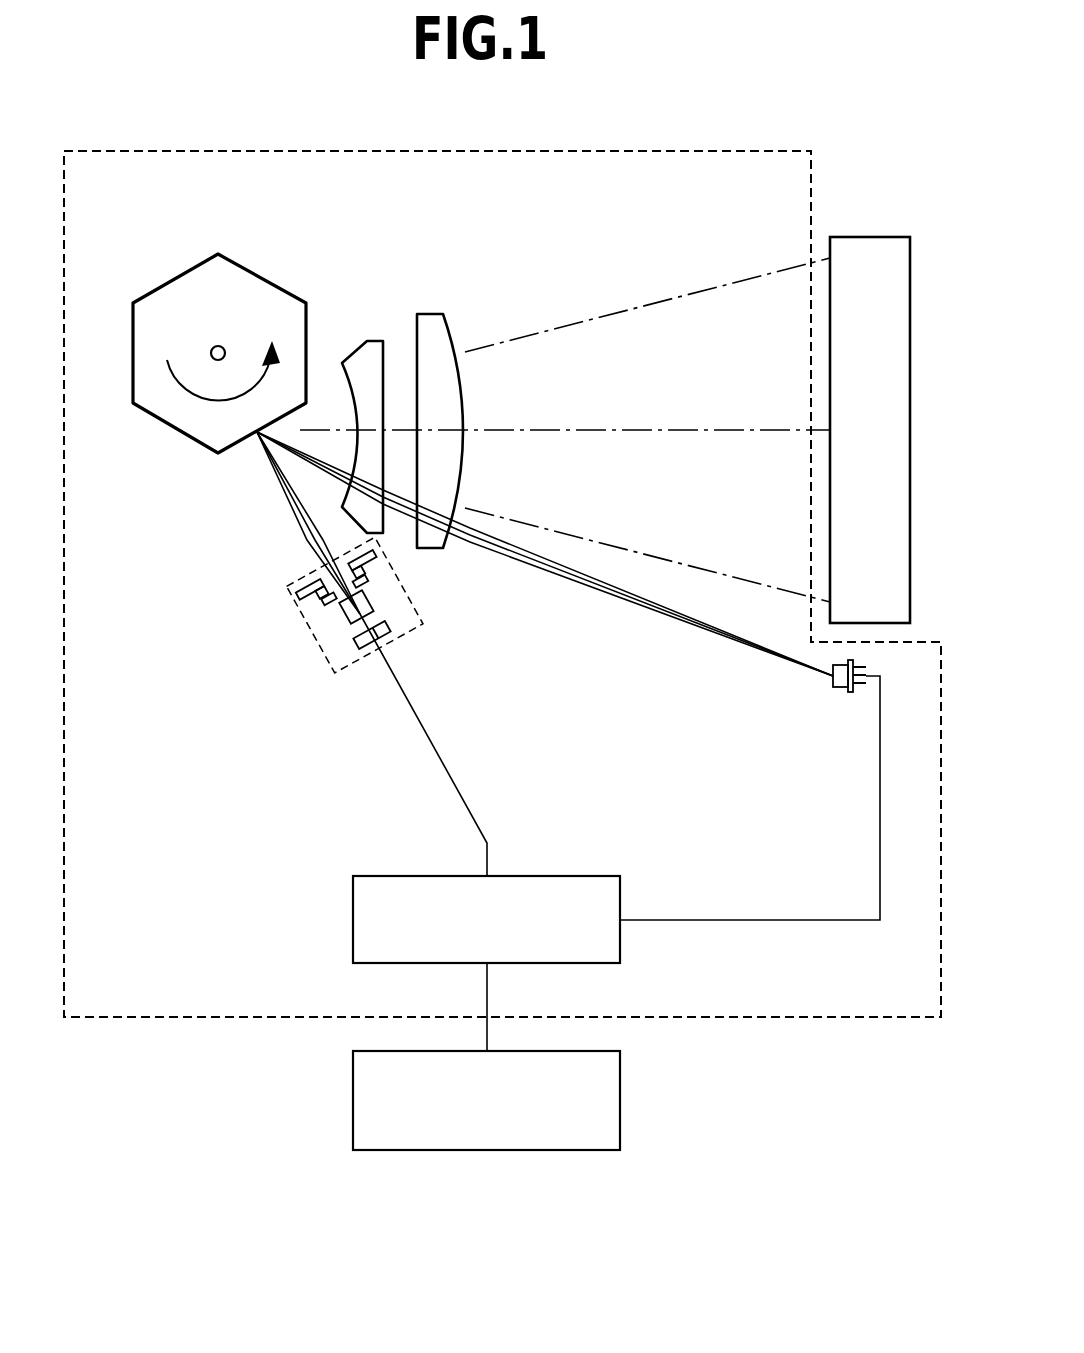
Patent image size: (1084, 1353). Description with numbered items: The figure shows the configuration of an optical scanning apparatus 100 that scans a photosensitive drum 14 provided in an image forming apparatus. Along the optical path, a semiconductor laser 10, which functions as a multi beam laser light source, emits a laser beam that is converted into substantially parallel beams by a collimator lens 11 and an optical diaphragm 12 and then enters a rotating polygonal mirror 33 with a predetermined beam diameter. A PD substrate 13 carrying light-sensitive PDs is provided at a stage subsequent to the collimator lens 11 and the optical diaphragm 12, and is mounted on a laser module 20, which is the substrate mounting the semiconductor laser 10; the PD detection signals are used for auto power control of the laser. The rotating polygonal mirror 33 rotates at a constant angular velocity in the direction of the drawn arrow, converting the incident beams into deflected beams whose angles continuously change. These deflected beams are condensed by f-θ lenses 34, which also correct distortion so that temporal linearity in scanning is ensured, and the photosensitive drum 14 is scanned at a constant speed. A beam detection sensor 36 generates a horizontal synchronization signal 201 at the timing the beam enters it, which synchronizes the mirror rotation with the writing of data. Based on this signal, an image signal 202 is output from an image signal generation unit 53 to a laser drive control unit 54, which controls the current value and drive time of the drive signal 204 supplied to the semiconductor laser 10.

The optical scanning apparatus 100 is at (205, 1018).
The rotating polygonal mirror 33 is at (255, 270).
The f-θ lenses 34 is at (475, 308).
The photosensitive drum 14 is at (872, 237).
The beam detection (BD) sensor 36 is at (838, 690).
The laser module 20 is at (420, 609).
The PD substrate 13 is at (300, 598).
The optical diaphragm 12 is at (327, 604).
The collimator lens 11 is at (336, 616).
The semiconductor laser 10 is at (367, 654).
The drive (light emission) signal 204 is at (437, 740).
The horizontal synchronization signal (BD signal) 201 is at (878, 830).
The image signal 202 is at (488, 990).
The laser drive control unit 54 is at (560, 876).
The image signal generation unit 53 is at (622, 1102).